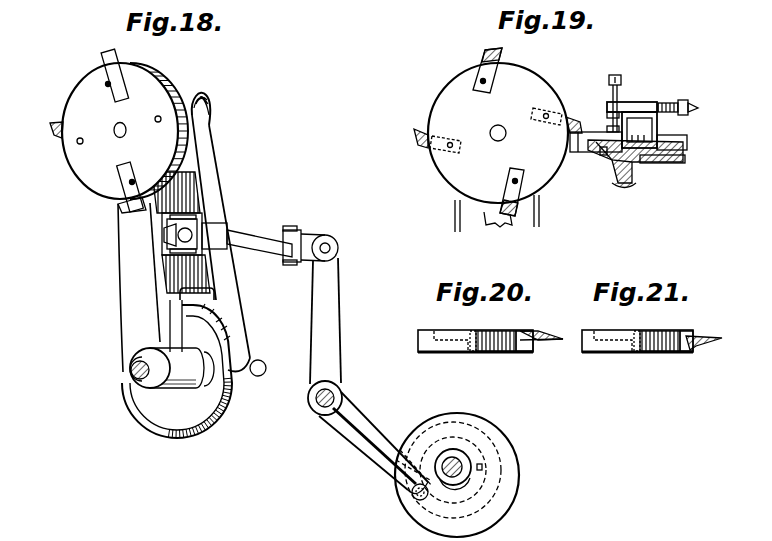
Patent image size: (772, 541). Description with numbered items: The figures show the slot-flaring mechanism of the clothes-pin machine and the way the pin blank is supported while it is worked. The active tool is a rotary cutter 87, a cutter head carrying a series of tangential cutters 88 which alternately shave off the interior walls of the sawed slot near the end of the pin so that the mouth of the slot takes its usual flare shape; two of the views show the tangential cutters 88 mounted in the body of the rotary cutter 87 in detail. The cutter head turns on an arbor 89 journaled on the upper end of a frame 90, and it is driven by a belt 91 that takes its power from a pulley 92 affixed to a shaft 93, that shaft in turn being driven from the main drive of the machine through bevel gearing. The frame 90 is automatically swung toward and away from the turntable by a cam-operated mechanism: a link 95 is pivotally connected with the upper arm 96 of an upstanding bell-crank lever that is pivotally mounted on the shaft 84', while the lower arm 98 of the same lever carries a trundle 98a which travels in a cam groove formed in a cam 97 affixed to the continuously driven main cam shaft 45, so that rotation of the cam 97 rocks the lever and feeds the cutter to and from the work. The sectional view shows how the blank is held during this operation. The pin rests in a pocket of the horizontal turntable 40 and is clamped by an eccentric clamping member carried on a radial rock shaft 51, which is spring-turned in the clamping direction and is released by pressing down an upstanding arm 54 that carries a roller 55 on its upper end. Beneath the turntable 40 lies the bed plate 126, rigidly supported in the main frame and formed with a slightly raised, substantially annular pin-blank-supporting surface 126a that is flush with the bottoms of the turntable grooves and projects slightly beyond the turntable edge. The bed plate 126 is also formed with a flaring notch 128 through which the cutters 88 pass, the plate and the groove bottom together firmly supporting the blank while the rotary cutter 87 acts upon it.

In FIG. 18, the rotary cutter 87 is at (85, 172).
In FIG. 19, the rotary cutter 87 is at (447, 89).
In FIG. 20, the rotary cutter 87 is at (450, 343).
In FIG. 21, the rotary cutter 87 is at (618, 343).
In FIG. 18, the tangential cutters 88 is at (52, 131).
In FIG. 19, the tangential cutters 88 is at (425, 138).
In FIG. 20, the tangential cutters 88 is at (540, 337).
In FIG. 21, the tangential cutters 88 is at (697, 347).
In FIG. 18, the arbor 89 is at (124, 123).
In FIG. 19, the arbor 89 is at (495, 127).
In FIG. 18, the frame 90 is at (130, 259).
In FIG. 19, the frame 90 is at (490, 221).
In FIG. 18, the belt 91 is at (213, 197).
In FIG. 19, the belt 91 is at (540, 205).
In FIG. 18, the pulley 92 is at (183, 418).
In FIG. 18, the shaft 93 is at (130, 373).
In FIG. 18, the link 95 is at (255, 240).
In FIG. 18, the upper arm 96 is at (330, 322).
In FIG. 18, the shaft 84' is at (306, 401).
In FIG. 18, the lower arm 98 is at (368, 446).
In FIG. 18, the trundle 98a is at (410, 498).
In FIG. 18, the cam 97 is at (498, 438).
In FIG. 18, the main cam shaft 45 is at (462, 476).
In FIG. 19, the flaring notch 128 is at (578, 150).
In FIG. 19, the bed plate 126 is at (628, 188).
In FIG. 19, the pin-blank-supporting surface 126a is at (590, 152).
In FIG. 19, the turntable 40 is at (648, 160).
In FIG. 19, the upstanding arm 54 is at (610, 98).
In FIG. 19, the roller 55 is at (618, 77).
In FIG. 19, the rock shaft 51 is at (693, 107).